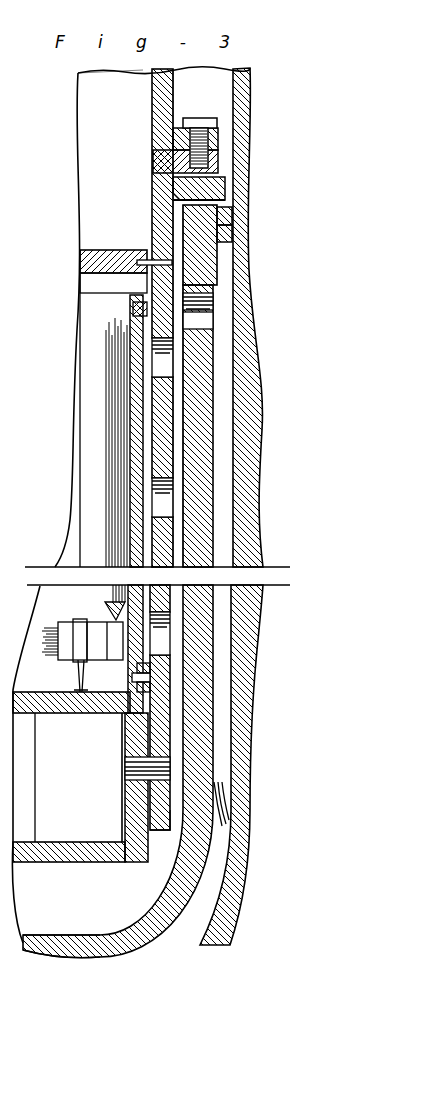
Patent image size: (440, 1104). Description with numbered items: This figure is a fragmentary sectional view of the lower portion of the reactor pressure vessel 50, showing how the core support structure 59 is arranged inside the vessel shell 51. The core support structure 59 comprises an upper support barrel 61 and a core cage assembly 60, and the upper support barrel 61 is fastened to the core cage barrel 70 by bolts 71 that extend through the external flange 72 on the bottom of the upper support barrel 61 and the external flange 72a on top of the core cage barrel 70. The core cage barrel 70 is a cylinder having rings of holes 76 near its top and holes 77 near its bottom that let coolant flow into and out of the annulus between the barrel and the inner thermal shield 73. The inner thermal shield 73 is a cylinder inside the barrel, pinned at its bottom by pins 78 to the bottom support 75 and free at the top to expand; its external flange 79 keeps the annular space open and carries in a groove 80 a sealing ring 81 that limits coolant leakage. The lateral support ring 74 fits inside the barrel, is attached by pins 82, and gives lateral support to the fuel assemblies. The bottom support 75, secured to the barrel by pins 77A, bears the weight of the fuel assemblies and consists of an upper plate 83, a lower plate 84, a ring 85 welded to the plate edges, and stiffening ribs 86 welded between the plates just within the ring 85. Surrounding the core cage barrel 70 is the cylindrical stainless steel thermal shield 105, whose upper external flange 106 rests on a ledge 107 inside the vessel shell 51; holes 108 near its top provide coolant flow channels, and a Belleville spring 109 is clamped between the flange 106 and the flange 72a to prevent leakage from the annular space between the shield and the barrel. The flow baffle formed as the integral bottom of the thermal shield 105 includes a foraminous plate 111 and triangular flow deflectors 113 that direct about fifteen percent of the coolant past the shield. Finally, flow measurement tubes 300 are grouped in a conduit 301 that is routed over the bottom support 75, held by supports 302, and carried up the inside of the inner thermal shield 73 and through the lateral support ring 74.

The pressure vessel 50 is at (196, 962).
The vessel shell 51 is at (247, 92).
The core support structure 59 is at (145, 155).
The core cage assembly 60 is at (185, 425).
The upper support barrel 61 is at (166, 90).
The core cage barrel 70 is at (235, 539).
The bolts 71 is at (210, 118).
The external flange 72 is at (219, 138).
The external flange 72a is at (219, 161).
The inner thermal shield 73 is at (136, 391).
The lateral support ring 74 is at (103, 262).
The bottom support 75 is at (166, 838).
The holes 76 is at (163, 369).
The holes 77 is at (160, 637).
The pins 77A is at (135, 769).
The pins 78 is at (133, 678).
The external flange 79 is at (146, 300).
The groove 80 is at (133, 310).
The sealing ring 81 is at (198, 321).
The pins 82 is at (160, 262).
The upper plate 83 is at (108, 713).
The lower plate 84 is at (38, 842).
The ring 85 is at (136, 865).
The stiffening ribs 86 is at (100, 833).
The thermal shield 105 is at (205, 444).
The upper external flange 106 is at (230, 215).
The ledge 107 is at (232, 232).
The holes 108 is at (208, 306).
The Belleville spring 109 is at (225, 188).
The foraminous plate 111 is at (40, 947).
The flow deflectors 113 is at (222, 816).
The tubes 300 is at (66, 668).
The conduit 301 is at (93, 630).
The supports 302 is at (86, 713).